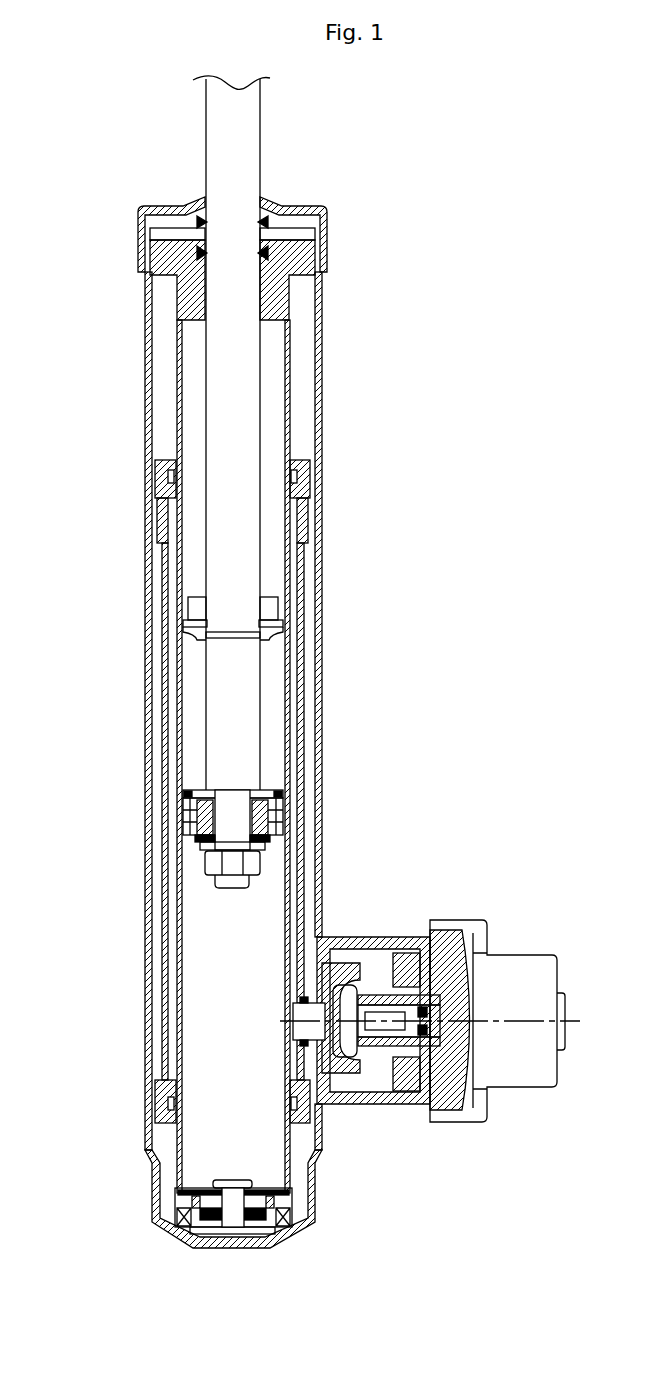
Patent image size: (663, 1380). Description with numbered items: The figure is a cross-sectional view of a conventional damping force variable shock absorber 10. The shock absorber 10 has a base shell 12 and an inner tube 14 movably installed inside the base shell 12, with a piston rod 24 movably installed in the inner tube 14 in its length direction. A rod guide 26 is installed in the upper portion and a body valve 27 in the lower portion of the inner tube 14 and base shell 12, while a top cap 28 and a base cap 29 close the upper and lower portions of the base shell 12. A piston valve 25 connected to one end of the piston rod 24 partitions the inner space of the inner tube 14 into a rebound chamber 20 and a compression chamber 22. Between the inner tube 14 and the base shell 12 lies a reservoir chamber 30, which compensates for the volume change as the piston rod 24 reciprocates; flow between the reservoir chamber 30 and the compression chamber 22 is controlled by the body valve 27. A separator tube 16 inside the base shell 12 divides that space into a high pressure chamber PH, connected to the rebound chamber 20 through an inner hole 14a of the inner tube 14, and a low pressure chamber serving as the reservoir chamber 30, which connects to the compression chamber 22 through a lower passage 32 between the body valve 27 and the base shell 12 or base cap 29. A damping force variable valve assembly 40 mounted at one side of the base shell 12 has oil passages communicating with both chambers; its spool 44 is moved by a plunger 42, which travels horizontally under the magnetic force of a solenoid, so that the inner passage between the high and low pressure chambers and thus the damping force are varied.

The damping force variable shock absorber 10 is at (345, 669).
The base shell 12 is at (322, 772).
The inner tube 14 is at (290, 432).
The inner hole 14a is at (298, 529).
The separator tube 16 is at (300, 590).
The rebound chamber 20 is at (283, 393).
The compression chamber 22 is at (262, 892).
The piston rod 24 is at (256, 137).
The piston valve 25 is at (181, 816).
The rod guide 26 is at (273, 293).
The body valve 27 is at (316, 1212).
The top cap 28 is at (326, 250).
The base cap 29 is at (178, 1241).
The reservoir chamber 30 is at (157, 678).
The high pressure chamber PH is at (173, 733).
The lower passage 32 is at (285, 1234).
The damping force variable valve assembly 40 is at (522, 930).
The plunger 42 is at (458, 1022).
The spool 44 is at (381, 1030).